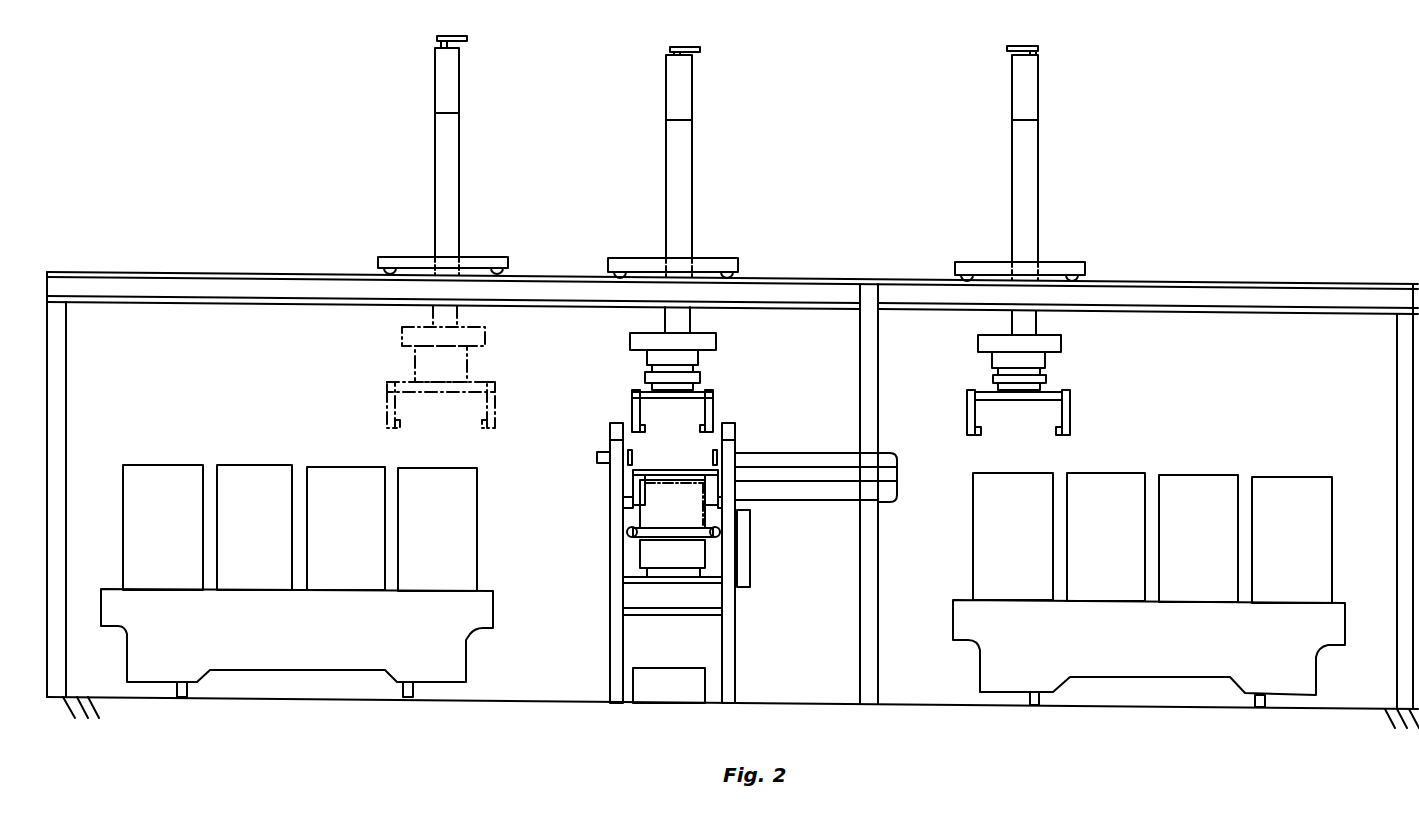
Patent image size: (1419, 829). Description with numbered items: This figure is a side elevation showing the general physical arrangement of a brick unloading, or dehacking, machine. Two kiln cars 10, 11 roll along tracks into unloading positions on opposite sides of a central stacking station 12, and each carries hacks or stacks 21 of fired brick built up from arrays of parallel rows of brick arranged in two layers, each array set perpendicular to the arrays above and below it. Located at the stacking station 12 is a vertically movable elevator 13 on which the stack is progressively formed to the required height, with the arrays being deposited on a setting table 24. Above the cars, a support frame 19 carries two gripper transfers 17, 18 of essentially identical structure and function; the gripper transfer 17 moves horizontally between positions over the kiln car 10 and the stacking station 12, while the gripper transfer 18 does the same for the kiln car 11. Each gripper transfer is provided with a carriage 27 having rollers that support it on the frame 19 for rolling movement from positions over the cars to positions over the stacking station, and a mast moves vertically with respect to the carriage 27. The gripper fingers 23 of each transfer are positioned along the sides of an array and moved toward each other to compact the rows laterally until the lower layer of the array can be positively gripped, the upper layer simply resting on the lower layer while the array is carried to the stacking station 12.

The kiln car 10 is at (466, 662).
The kiln car 11 is at (978, 657).
The stacking station 12 is at (740, 592).
The elevator 13 is at (652, 579).
The gripper transfer 17 is at (468, 363).
The gripper transfer 18 is at (1062, 348).
The support frame 19 is at (878, 410).
The stacks 21 is at (172, 465).
The gripper fingers 23 is at (713, 412).
The setting table 24 is at (658, 470).
The carriage 27 is at (715, 259).